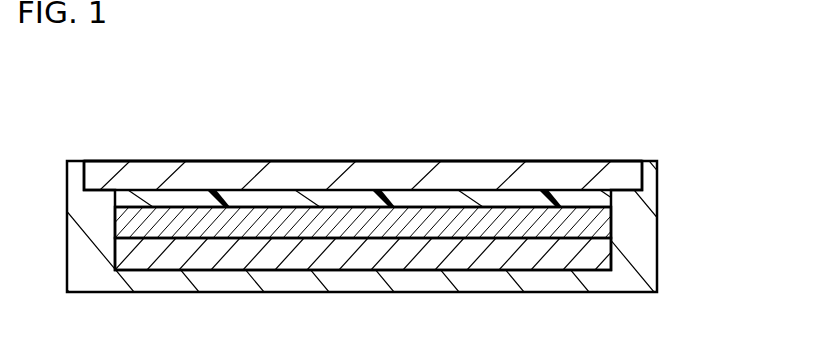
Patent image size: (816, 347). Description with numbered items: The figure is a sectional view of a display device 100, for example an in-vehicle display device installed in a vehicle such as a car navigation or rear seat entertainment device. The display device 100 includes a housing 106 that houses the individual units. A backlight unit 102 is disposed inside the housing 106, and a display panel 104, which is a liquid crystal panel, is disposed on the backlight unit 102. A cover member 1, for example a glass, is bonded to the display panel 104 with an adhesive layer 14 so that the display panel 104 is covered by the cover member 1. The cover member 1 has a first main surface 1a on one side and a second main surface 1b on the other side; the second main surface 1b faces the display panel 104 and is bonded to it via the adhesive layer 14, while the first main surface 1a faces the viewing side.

The display device 100 is at (364, 167).
The cover member 1 is at (570, 178).
The first main surface 1a is at (487, 161).
The second main surface 1b is at (412, 192).
The adhesive layer 14 is at (352, 195).
The display panel 104 is at (273, 222).
The backlight unit 102 is at (180, 253).
The housing 106 is at (627, 250).